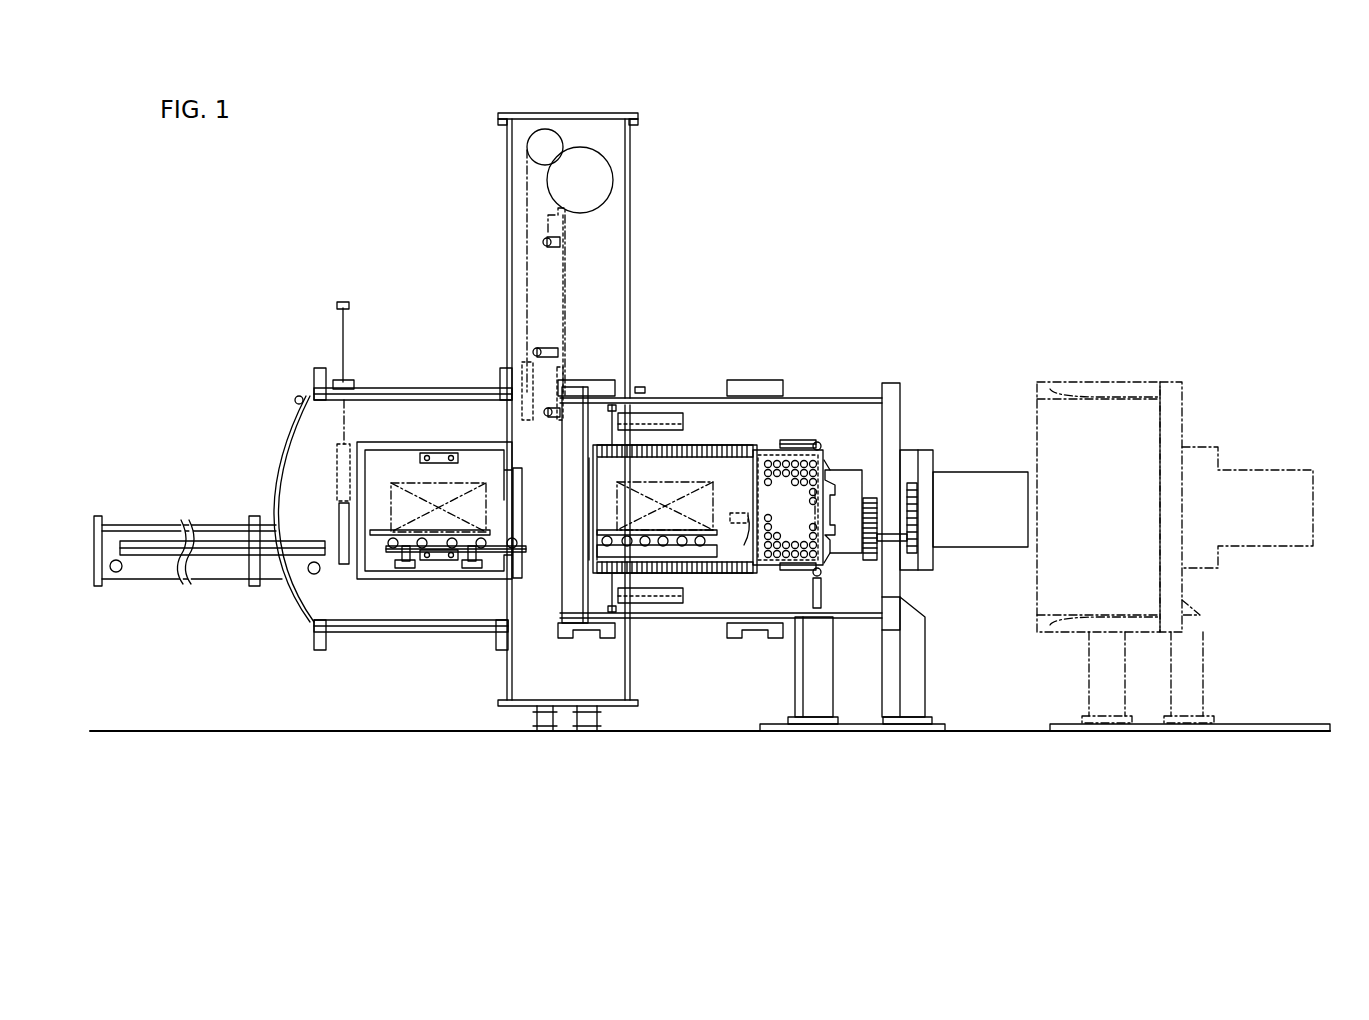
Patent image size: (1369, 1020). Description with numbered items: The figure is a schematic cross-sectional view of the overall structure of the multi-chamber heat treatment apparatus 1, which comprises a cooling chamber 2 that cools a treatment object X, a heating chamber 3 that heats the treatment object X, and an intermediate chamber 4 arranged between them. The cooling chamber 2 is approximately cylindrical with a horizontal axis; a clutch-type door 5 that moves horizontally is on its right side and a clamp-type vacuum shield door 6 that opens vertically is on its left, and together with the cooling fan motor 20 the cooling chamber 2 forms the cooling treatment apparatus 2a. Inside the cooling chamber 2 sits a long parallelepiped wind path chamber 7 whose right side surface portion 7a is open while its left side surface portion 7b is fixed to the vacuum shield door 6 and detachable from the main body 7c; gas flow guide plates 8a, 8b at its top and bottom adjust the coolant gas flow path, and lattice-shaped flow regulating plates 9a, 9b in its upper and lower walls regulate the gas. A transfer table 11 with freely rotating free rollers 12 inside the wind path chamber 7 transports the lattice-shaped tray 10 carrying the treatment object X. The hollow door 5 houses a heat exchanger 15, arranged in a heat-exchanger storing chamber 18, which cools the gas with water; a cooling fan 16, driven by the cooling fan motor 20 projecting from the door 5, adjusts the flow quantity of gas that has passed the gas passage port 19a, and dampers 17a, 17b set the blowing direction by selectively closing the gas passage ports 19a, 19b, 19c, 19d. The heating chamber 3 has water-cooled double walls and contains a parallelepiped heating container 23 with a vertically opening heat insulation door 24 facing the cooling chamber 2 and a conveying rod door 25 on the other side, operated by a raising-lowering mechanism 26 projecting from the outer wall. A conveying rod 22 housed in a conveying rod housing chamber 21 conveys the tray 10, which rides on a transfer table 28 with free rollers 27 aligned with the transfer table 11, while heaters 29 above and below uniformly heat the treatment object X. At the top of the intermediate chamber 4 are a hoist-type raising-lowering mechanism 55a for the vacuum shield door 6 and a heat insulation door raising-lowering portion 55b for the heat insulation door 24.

The multi-chamber heat treatment apparatus 1 is at (962, 170).
The cooling chamber 2 is at (686, 714).
The cooling treatment apparatus 2a is at (907, 628).
The heating chamber 3 is at (368, 640).
The intermediate chamber 4 is at (641, 144).
The door 5 is at (875, 357).
The vacuum shield door 6 is at (570, 618).
The wind path chamber 7 is at (696, 440).
The side surface portion 7a is at (820, 556).
The side surface portion 7b is at (572, 572).
The main body 7c is at (756, 440).
The gas flow guide plate 8a is at (670, 430).
The gas flow guide plate 8b is at (664, 604).
The flow regulating plate 9a is at (719, 443).
The flow regulating plate 9b is at (640, 574).
The tray 10 is at (446, 530).
The transfer table 11 is at (716, 574).
The free rollers 12 is at (688, 550).
The heat exchanger 15 is at (818, 460).
The cooling fan 16 is at (852, 497).
The damper 17a is at (800, 440).
The damper 17b is at (815, 576).
The heat-exchanger storing chamber 18 is at (772, 572).
The gas passage port 19a is at (797, 580).
The gas passage port 19b is at (830, 586).
The gas passage port 19c is at (832, 418).
The gas passage port 19d is at (817, 440).
The cooling fan motor 20 is at (960, 526).
The conveying rod housing chamber 21 is at (150, 506).
The conveying rod 22 is at (240, 556).
The heating container 23 is at (490, 427).
The heat insulation door 24 is at (525, 522).
The conveying rod door 25 is at (346, 526).
The raising-lowering mechanism 26 is at (329, 350).
The free rollers 27 is at (472, 562).
The transfer table 28 is at (497, 554).
The heaters 29 is at (442, 455).
The raising-lowering mechanism 55a is at (612, 176).
The heat insulation door raising-lowering portion 55b is at (547, 147).
The treatment object X is at (617, 517).